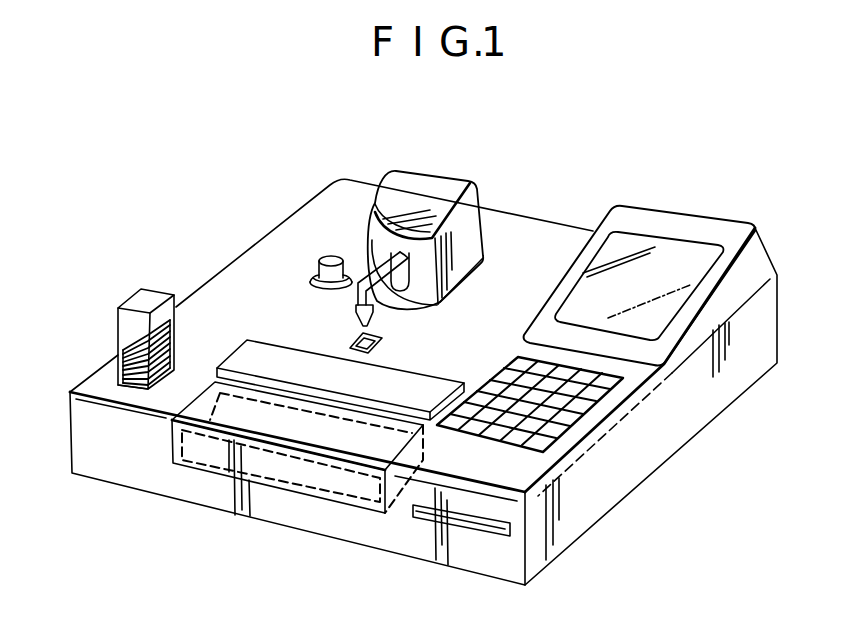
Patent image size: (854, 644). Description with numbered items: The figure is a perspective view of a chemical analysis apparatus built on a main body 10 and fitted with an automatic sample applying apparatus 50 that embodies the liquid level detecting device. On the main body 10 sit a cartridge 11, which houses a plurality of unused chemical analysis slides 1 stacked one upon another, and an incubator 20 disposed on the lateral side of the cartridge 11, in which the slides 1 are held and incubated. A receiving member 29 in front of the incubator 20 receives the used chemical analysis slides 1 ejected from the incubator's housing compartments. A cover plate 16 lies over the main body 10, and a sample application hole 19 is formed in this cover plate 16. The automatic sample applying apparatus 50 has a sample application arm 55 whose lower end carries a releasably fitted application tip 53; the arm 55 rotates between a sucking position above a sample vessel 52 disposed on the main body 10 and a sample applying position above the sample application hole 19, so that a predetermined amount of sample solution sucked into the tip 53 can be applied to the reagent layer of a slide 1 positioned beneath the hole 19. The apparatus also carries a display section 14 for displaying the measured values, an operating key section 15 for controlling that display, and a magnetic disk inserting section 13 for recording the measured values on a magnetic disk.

The main body 10 is at (266, 228).
The chemical analysis slide 1 is at (178, 320).
The cartridge 11 is at (136, 390).
The magnetic disk inserting section 13 is at (477, 522).
The display section 14 is at (667, 265).
The operating key section 15 is at (579, 413).
The cover plate 16 is at (533, 245).
The sample application hole 19 is at (350, 343).
The incubator 20 is at (262, 362).
The receiving member 29 is at (293, 473).
The automatic sample applying apparatus 50 is at (482, 171).
The sample vessel 52 is at (333, 250).
The application tip 53 is at (372, 322).
The sample application arm 55 is at (438, 300).